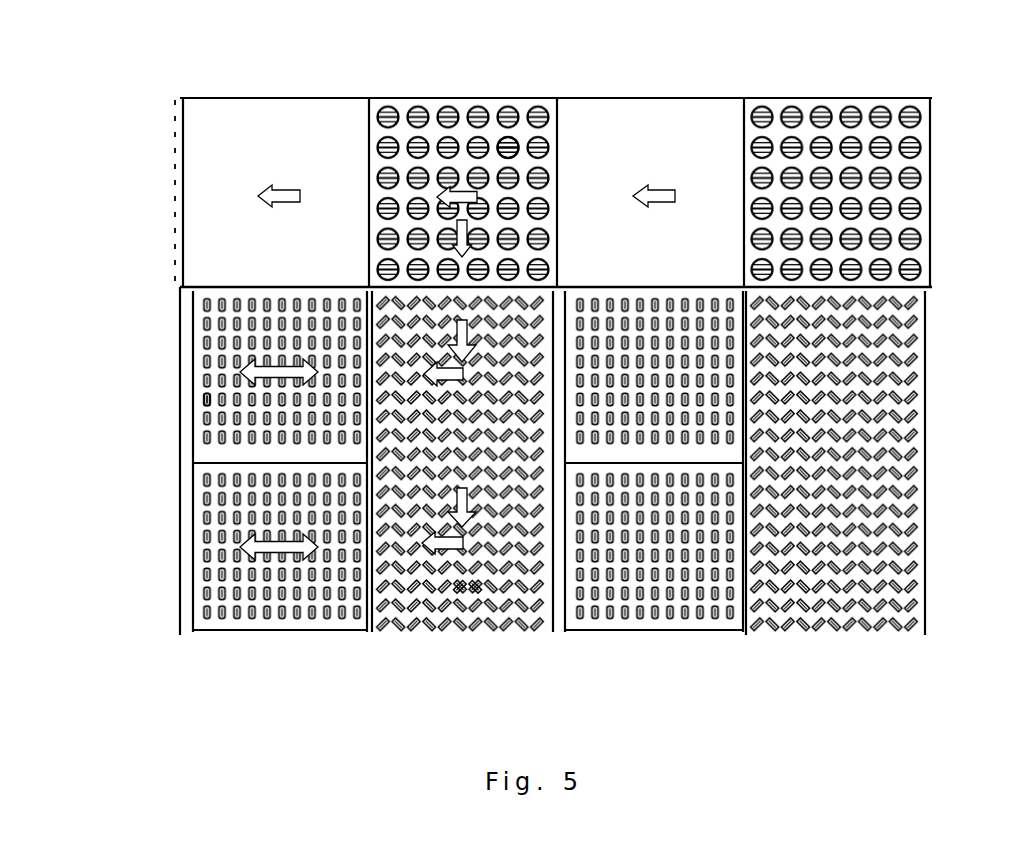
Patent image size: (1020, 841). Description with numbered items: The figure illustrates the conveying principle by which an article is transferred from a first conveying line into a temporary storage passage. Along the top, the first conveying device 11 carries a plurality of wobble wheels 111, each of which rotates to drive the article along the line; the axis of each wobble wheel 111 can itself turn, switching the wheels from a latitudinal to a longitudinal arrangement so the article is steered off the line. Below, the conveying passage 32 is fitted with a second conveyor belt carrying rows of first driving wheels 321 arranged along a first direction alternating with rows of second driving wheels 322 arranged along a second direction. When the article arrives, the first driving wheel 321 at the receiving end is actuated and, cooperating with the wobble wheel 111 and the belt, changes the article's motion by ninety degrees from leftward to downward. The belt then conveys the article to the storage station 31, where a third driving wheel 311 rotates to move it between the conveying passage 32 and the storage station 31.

The first conveying device 11 is at (459, 133).
The wobble wheel 111 is at (511, 140).
The storage station 31 is at (258, 315).
The third driving wheel 311 is at (205, 397).
The conveying passage 32 is at (500, 392).
The first driving wheel 321 is at (458, 583).
The second driving wheel 322 is at (478, 590).